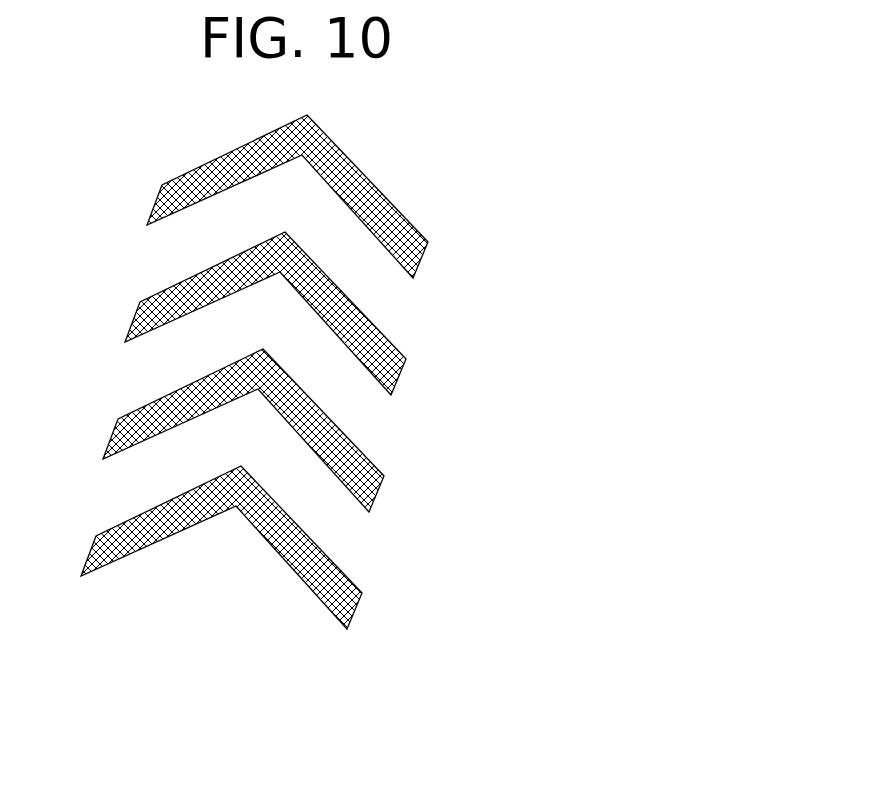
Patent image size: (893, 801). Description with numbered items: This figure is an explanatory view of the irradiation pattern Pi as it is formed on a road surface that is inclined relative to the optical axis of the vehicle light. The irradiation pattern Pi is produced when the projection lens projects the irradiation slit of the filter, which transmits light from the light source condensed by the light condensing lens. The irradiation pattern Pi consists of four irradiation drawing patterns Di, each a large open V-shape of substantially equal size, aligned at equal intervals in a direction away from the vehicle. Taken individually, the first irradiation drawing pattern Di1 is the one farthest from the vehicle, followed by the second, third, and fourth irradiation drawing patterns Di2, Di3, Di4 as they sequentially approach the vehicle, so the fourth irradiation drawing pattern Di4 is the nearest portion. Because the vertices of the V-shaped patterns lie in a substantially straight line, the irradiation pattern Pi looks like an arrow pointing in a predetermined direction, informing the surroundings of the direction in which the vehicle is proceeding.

The irradiation pattern Pi is at (423, 176).
The irradiation drawing pattern Di is at (316, 405).
The first irradiation drawing pattern Di1 is at (424, 281).
The second irradiation drawing pattern Di2 is at (405, 385).
The third irradiation drawing pattern Di3 is at (385, 502).
The fourth irradiation drawing pattern Di4 is at (372, 610).